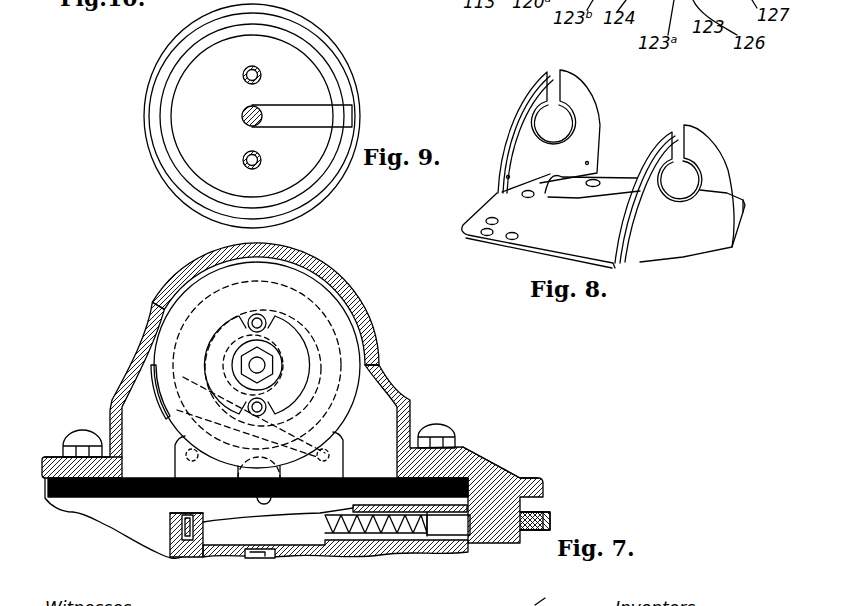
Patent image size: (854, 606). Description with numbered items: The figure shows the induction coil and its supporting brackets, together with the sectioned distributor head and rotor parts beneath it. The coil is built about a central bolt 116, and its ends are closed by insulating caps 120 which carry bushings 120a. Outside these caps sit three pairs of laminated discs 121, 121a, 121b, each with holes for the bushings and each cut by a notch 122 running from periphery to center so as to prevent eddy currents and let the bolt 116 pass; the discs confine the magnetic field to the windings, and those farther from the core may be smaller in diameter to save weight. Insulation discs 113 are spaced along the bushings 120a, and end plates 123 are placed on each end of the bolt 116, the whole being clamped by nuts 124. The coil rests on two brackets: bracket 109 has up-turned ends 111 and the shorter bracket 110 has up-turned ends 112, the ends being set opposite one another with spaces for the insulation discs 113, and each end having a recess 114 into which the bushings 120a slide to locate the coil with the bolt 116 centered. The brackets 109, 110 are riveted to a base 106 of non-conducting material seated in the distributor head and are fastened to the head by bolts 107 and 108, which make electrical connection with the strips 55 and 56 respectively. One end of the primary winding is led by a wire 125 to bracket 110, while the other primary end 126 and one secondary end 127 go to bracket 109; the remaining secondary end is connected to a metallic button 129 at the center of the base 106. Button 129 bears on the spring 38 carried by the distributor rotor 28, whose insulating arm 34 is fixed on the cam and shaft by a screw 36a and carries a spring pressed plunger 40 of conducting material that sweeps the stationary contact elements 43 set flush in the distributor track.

In FIG. 9, the insulating cap 120 is at (312, 31).
In FIG. 7, the insulating cap 120 is at (297, 243).
In FIG. 9, the laminated disc 121 is at (330, 60).
In FIG. 9, the laminated disc 121a is at (333, 78).
In FIG. 9, the laminated disc 121b is at (325, 97).
In FIG. 9, the notch 122 is at (310, 118).
In FIG. 9, the bolt 116 is at (243, 116).
In FIG. 7, the bolt 116 is at (258, 367).
In FIG. 9, the bushing 120a is at (245, 75).
In FIG. 7, the insulation disc 113 is at (295, 280).
In FIG. 7, the end plate 123 is at (285, 330).
In FIG. 7, the nut 124 is at (272, 357).
In FIG. 7, the wire 125 is at (160, 410).
In FIG. 8, the up-turned end 112 is at (537, 97).
In FIG. 7, the up-turned end 112 is at (183, 448).
In FIG. 8, the up-turned end 111 is at (530, 77).
In FIG. 7, the up-turned end 111 is at (340, 453).
In FIG. 8, the recess 114 is at (547, 117).
In FIG. 8, the coil bracket 110 is at (538, 242).
In FIG. 7, the coil bracket 110 is at (160, 478).
In FIG. 8, the coil bracket 109 is at (743, 203).
In FIG. 7, the coil bracket 109 is at (437, 472).
In FIG. 7, the bolt 108 is at (88, 440).
In FIG. 7, the bolt 107 is at (438, 432).
In FIG. 7, the strip 56 is at (50, 457).
In FIG. 7, the metallic strip 55 is at (480, 455).
In FIG. 7, the stationary contact element 43 is at (537, 522).
In FIG. 7, the other end of the primary winding 126 is at (330, 450).
In FIG. 7, the end of the secondary winding 127 is at (327, 455).
In FIG. 7, the base of non-conducting material 106 is at (113, 498).
In FIG. 7, the metallic button 129 is at (260, 502).
In FIG. 7, the distributor rotor 28 is at (180, 540).
In FIG. 7, the spring 38 is at (230, 520).
In FIG. 7, the spring pressed plunger 40 is at (438, 525).
In FIG. 7, the arm 34 is at (457, 540).
In FIG. 7, the screw 36a is at (265, 554).